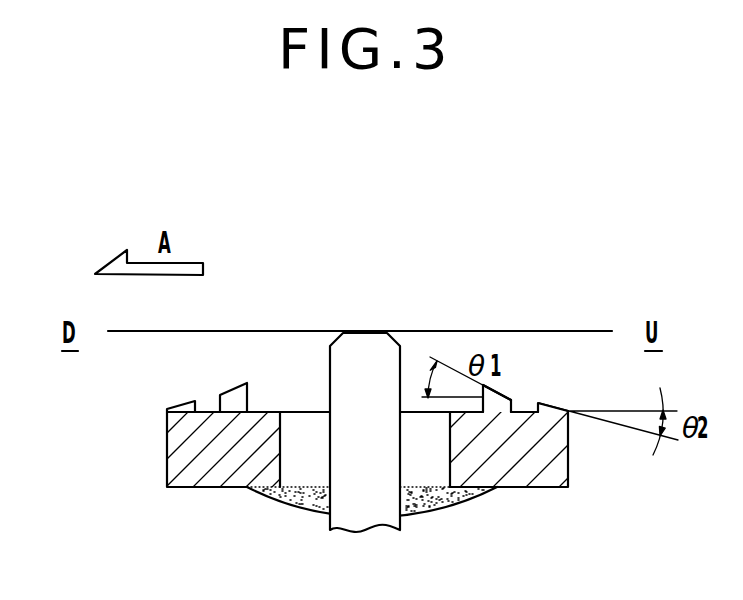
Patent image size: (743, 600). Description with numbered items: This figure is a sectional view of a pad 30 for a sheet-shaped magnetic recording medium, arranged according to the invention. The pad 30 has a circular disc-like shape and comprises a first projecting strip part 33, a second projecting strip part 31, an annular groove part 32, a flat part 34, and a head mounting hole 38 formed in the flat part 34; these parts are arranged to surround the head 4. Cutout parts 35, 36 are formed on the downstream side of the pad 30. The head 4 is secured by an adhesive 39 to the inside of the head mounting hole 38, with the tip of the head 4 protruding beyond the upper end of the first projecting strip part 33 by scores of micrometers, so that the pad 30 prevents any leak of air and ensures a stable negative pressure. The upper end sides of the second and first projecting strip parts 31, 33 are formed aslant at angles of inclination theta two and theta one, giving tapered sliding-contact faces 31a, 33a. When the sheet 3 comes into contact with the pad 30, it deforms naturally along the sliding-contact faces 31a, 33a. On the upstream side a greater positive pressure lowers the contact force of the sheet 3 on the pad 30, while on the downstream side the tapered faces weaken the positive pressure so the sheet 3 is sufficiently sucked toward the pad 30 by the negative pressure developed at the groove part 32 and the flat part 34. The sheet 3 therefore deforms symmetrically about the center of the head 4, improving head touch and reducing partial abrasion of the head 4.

The sheet 3 is at (266, 330).
The head 4 is at (343, 387).
The pad 30 is at (151, 465).
The second projecting strip part 31 is at (546, 408).
The sliding-contact face 31a is at (555, 402).
The annular groove part 32 is at (542, 400).
The first projecting strip part 33 is at (525, 412).
The sliding-contact face 33a is at (492, 390).
The flat part 34 is at (262, 413).
The cutout part 35 is at (183, 407).
The cutout part 36 is at (232, 395).
The head mounting hole 38 is at (432, 466).
The adhesive 39 is at (294, 494).